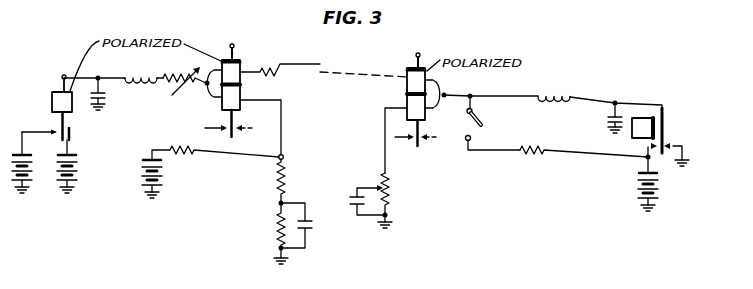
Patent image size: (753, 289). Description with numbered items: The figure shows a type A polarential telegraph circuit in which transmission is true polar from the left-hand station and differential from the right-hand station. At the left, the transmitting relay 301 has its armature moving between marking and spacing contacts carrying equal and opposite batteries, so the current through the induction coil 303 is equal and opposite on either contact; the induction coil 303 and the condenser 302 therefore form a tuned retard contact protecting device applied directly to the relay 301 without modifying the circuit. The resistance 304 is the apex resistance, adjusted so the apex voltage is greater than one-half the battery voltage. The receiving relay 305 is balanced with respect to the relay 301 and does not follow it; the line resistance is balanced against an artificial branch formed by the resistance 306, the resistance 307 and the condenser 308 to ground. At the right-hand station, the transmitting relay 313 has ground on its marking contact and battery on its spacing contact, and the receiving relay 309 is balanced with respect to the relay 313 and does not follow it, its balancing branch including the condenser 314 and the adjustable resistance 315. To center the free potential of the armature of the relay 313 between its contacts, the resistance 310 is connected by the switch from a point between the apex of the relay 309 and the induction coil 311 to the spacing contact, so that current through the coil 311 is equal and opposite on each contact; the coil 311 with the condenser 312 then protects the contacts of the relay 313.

The transmitting relay 301 is at (52, 101).
The condenser 302 is at (107, 96).
The induction coil 303 is at (146, 75).
The resistance 304 is at (182, 76).
The receiving relay 305 is at (238, 65).
The resistance 306 is at (286, 183).
The resistance 307 is at (275, 226).
The condenser 308 is at (315, 229).
The receiving relay 309 is at (413, 86).
The resistance 310 is at (527, 158).
The induction coil 311 is at (560, 94).
The condenser 312 is at (604, 118).
The transmitting relay 313 is at (634, 138).
The condenser 314 is at (350, 196).
The resistance 315 is at (390, 194).